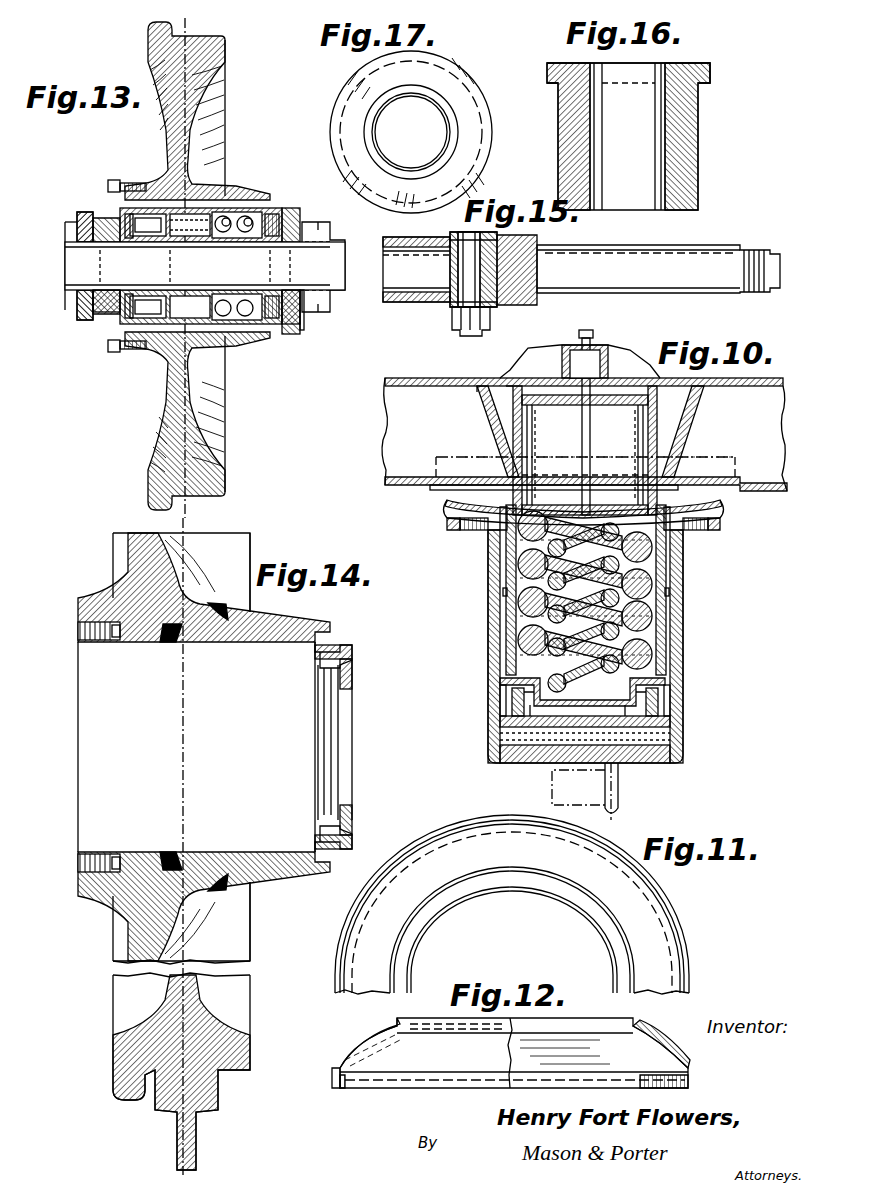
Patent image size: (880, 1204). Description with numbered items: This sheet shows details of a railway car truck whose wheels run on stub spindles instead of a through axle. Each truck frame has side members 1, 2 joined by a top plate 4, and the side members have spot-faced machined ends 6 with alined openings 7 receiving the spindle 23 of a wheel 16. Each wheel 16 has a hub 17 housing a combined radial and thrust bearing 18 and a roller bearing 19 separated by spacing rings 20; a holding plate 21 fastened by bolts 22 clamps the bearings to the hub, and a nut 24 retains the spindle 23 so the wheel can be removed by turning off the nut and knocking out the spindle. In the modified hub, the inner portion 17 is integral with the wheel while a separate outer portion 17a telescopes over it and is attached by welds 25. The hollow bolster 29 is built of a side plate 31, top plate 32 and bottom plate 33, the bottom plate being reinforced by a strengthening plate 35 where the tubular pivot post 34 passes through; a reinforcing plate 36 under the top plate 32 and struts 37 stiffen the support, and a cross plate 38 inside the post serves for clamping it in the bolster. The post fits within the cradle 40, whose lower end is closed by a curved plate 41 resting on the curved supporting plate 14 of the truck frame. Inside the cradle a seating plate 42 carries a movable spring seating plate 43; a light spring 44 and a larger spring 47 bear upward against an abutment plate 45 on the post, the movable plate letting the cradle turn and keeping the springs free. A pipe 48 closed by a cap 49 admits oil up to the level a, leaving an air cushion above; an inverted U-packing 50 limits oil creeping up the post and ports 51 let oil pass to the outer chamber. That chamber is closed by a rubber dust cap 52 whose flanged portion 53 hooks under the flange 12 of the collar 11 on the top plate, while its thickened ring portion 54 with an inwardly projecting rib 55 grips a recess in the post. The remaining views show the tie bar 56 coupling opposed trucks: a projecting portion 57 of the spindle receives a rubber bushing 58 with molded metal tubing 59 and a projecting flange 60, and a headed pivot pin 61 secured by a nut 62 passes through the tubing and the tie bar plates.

In FIG. 13, the side member 1 is at (282, 328).
In FIG. 10, the side member 1 is at (683, 655).
In FIG. 13, the side member 2 is at (77, 318).
In FIG. 10, the side member 2 is at (500, 646).
In FIG. 10, the top plate 4 is at (488, 540).
In FIG. 13, the spot-faced machined end 6 is at (100, 318).
In FIG. 13, the opening 7 is at (300, 208).
In FIG. 10, the collar 11 is at (712, 530).
In FIG. 10, the projecting flange 12 is at (722, 508).
In FIG. 10, the curved supporting plate 14 is at (622, 716).
In FIG. 13, the wheel 16 is at (228, 48).
In FIG. 10, the wheel 16 is at (590, 783).
In FIG. 14, the wheel 16 is at (140, 566).
In FIG. 13, the hub 17 is at (262, 205).
In FIG. 14, the hub 17 is at (100, 612).
In FIG. 14, the outer portion of hub 17a is at (330, 630).
In FIG. 13, the combined radial and thrust bearing 18 is at (250, 212).
In FIG. 13, the roller bearing 19 is at (118, 184).
In FIG. 13, the spacing ring 20 is at (212, 228).
In FIG. 13, the holding plate 21 is at (100, 222).
In FIG. 13, the bolt 22 is at (125, 220).
In FIG. 13, the spindle 23 is at (200, 270).
In FIG. 15, the spindle 23 is at (715, 260).
In FIG. 13, the nut 24 is at (322, 240).
In FIG. 14, the weld 25 is at (223, 600).
In FIG. 10, the bolster 29 is at (392, 454).
In FIG. 10, the side plate 31 is at (400, 418).
In FIG. 10, the top plate 32 is at (385, 382).
In FIG. 10, the bottom plate 33 is at (385, 480).
In FIG. 10, the pivot post 34 is at (658, 418).
In FIG. 10, the strengthening plate 35 is at (440, 491).
In FIG. 10, the reinforcing plate 36 is at (484, 400).
In FIG. 10, the strut 37 is at (497, 440).
In FIG. 10, the cross plate 38 is at (612, 408).
In FIG. 10, the cradle 40 is at (498, 568).
In FIG. 10, the curved plate 41 is at (530, 716).
In FIG. 10, the seating plate 42 is at (500, 702).
In FIG. 10, the movable spring seating plate 43 is at (528, 682).
In FIG. 10, the light spring 44 is at (500, 722).
In FIG. 10, the abutment plate 45 is at (604, 497).
In FIG. 10, the spring 47 is at (528, 652).
In FIG. 10, the pipe 48 is at (582, 420).
In FIG. 10, the cap 49 is at (593, 333).
In FIG. 10, the inverted U-packing 50 is at (505, 594).
In FIG. 10, the port 51 is at (507, 578).
In FIG. 10, the rubber dust cap 52 is at (446, 510).
In FIG. 11, the rubber dust cap 52 is at (648, 937).
In FIG. 12, the rubber dust cap 52 is at (380, 1045).
In FIG. 10, the flanged portion 53 is at (460, 526).
In FIG. 11, the flanged portion 53 is at (342, 960).
In FIG. 12, the flanged portion 53 is at (392, 1085).
In FIG. 10, the thickened ring portion 54 is at (690, 476).
In FIG. 11, the thickened ring portion 54 is at (596, 920).
In FIG. 12, the thickened ring portion 54 is at (630, 1028).
In FIG. 11, the inwardly projecting rib 55 is at (440, 920).
In FIG. 12, the inwardly projecting rib 55 is at (580, 1036).
In FIG. 15, the tie bar 56 is at (394, 278).
In FIG. 15, the projecting portion 57 is at (445, 305).
In FIG. 17, the rubber bushing 58 is at (448, 95).
In FIG. 16, the rubber bushing 58 is at (700, 125).
In FIG. 15, the rubber bushing 58 is at (452, 258).
In FIG. 17, the metal tubing 59 is at (428, 143).
In FIG. 16, the metal tubing 59 is at (668, 136).
In FIG. 15, the metal tubing 59 is at (458, 275).
In FIG. 17, the projecting flange 60 is at (350, 92).
In FIG. 16, the projecting flange 60 is at (710, 75).
In FIG. 15, the projecting flange 60 is at (450, 240).
In FIG. 15, the headed pivot pin 61 is at (505, 300).
In FIG. 15, the nut 62 is at (485, 318).
In FIG. 10, the oil level a is at (500, 553).